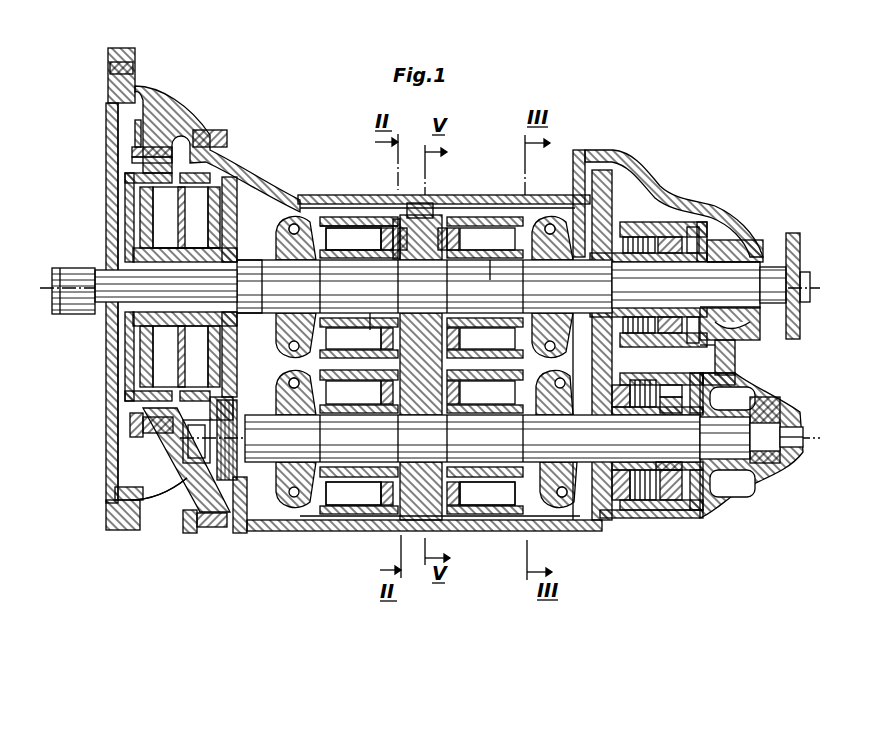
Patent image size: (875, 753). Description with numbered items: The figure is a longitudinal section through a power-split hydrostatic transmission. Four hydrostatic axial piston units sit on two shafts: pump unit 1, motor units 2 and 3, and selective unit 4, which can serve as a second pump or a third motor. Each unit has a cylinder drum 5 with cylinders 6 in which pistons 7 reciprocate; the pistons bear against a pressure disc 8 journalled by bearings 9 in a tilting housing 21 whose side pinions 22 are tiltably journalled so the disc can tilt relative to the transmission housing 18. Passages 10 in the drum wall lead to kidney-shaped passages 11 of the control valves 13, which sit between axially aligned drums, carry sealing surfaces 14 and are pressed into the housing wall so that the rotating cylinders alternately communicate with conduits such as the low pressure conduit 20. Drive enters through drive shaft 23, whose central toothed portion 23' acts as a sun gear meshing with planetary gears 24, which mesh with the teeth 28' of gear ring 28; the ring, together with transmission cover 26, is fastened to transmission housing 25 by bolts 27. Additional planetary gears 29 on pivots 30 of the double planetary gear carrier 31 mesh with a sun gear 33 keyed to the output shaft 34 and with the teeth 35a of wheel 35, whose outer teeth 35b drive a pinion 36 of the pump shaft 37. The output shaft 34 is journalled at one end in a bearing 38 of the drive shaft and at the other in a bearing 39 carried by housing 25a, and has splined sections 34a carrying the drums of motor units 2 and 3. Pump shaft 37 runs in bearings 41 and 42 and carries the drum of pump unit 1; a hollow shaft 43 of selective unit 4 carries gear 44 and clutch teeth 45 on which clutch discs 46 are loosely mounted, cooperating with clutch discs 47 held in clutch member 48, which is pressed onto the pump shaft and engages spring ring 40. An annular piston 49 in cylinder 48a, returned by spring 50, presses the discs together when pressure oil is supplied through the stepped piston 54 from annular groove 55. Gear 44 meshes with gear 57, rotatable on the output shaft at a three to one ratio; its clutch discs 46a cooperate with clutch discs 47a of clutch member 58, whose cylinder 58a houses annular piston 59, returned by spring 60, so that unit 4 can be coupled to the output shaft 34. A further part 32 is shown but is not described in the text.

The pump unit 1 is at (360, 514).
The motor unit 2 is at (350, 217).
The motor unit 3 is at (486, 217).
The selective unit 4 is at (506, 514).
The cylinder drum 5 is at (362, 219).
The cylinders 6 is at (380, 520).
The piston 7 is at (340, 228).
The pressure disc 8 is at (310, 220).
The bearings 9 is at (293, 216).
The passages 10 is at (395, 219).
The kidney-shaped passages 11 is at (403, 226).
The control valves 13 is at (430, 215).
The sealing surfaces 14 is at (434, 361).
The transmission housing 18 is at (512, 195).
The low pressure conduit 20 is at (424, 286).
The tilting housings 21 is at (550, 222).
The pinions 22 is at (262, 260).
The drive shaft 23 is at (115, 228).
The central toothed portion 23' is at (149, 245).
The planetary gears 24 is at (128, 355).
The transmission housing 25 is at (183, 98).
The housing 25a is at (732, 222).
The transmission cover 26 is at (125, 192).
The bolts 27 is at (136, 140).
The gear ring 28 is at (126, 151).
The teeth 28' is at (106, 151).
The planetary gears 29 is at (112, 335).
The pivots 30 is at (145, 370).
The double planetary gear carrier 31 is at (145, 216).
The spacer 32 is at (130, 422).
The sun gear 33 is at (215, 235).
The transmission output shaft 34 is at (752, 275).
The splined sections 34a is at (490, 260).
The wheel 35 is at (233, 405).
The teeth 35a is at (160, 450).
The outer teeth 35b is at (231, 440).
The pinion 36 is at (200, 533).
The pump shaft 37 is at (240, 533).
The bearing 38 is at (85, 314).
The bearing 39 is at (752, 240).
The spring ring 40 is at (620, 385).
The bearing 41 is at (195, 480).
The bearing 42 is at (745, 420).
The hollow shaft 43 is at (495, 505).
The gear 44 is at (620, 500).
The clutch teeth 45 is at (670, 500).
The clutch discs 46 is at (645, 380).
The clutch discs 46a is at (635, 237).
The clutch discs 47 is at (672, 385).
The clutch discs 47a is at (660, 226).
The clutch member 48 is at (683, 505).
The cylinder 48a is at (722, 380).
The annular piston 49 is at (725, 510).
The spring 50 is at (664, 500).
The stepped piston 54 is at (803, 432).
The annular groove 55 is at (778, 420).
The gear 57 is at (602, 170).
The clutch member 58 is at (672, 237).
The cylinder 58a is at (712, 214).
The annular piston 59 is at (693, 227).
The spring 60 is at (705, 345).